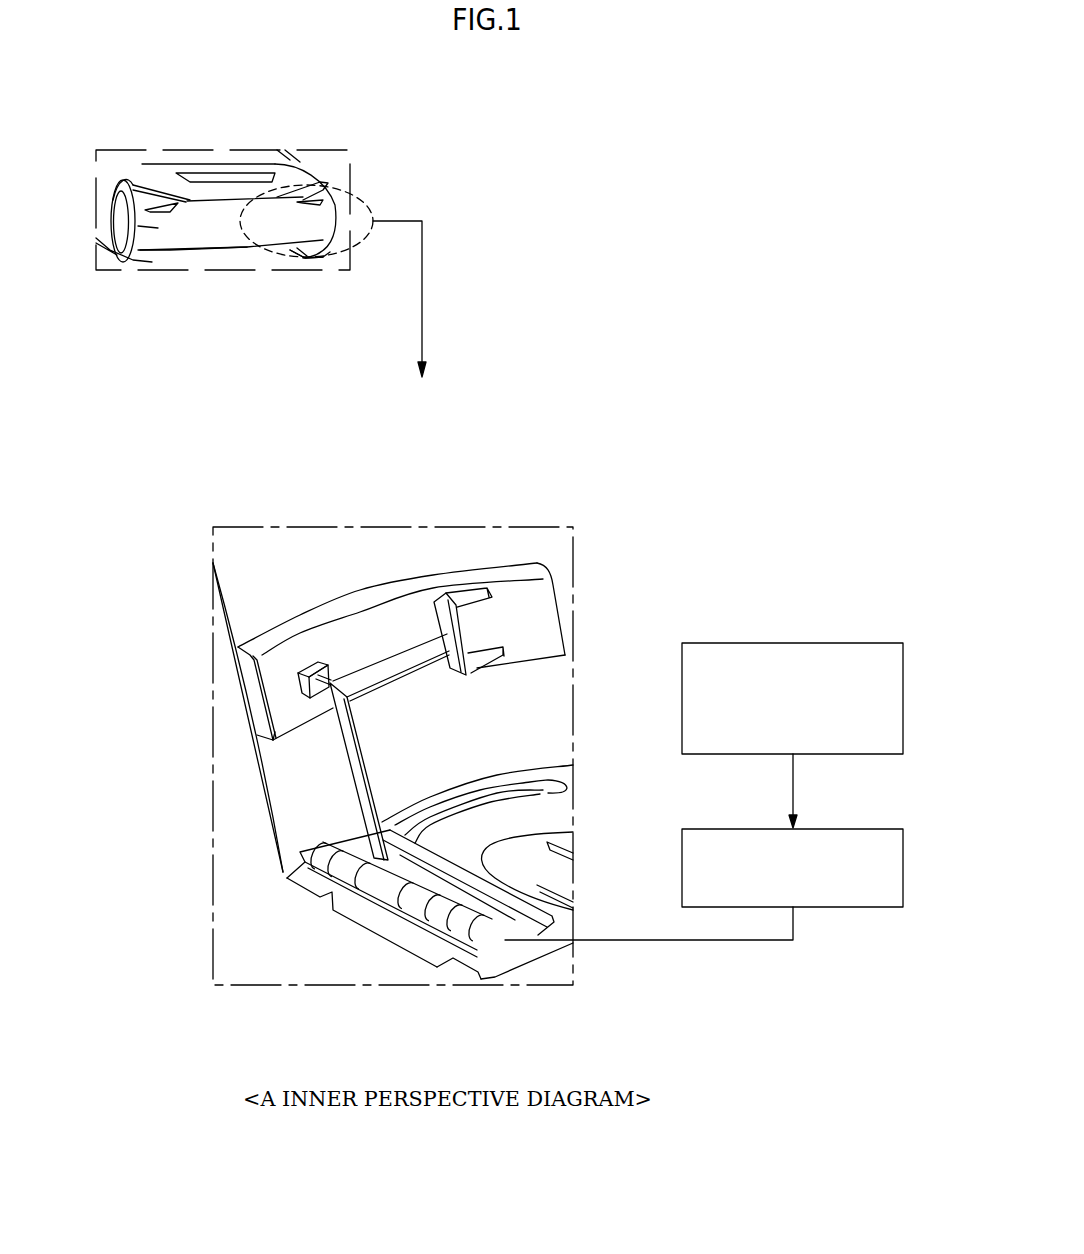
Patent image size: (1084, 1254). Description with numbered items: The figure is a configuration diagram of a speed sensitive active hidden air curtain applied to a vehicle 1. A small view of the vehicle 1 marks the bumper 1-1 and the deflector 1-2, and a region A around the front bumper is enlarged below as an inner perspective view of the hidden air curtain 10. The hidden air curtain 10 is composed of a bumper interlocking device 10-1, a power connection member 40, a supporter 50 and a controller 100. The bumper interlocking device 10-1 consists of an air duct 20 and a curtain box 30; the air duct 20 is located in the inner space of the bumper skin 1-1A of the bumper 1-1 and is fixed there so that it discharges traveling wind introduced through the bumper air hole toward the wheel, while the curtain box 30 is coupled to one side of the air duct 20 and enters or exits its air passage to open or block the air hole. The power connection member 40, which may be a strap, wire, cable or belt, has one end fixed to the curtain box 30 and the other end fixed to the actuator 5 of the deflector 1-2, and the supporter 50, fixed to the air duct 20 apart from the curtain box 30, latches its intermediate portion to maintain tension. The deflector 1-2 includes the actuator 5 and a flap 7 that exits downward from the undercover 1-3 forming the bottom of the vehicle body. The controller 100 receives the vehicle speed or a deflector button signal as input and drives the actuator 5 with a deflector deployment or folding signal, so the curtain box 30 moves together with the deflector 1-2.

The vehicle 1 is at (135, 165).
The bumper 1-1 is at (157, 225).
The bumper skin 1-1A is at (240, 597).
The deflector 1-2 is at (274, 236).
The undercover 1-3 is at (545, 813).
The enlarged region A is at (367, 203).
The hidden air curtain 10 is at (333, 222).
The bumper interlocking device 10-1 is at (560, 425).
The air duct 20 is at (497, 573).
The curtain box 30 is at (462, 635).
The power connection member 40 is at (353, 778).
The supporter 50 is at (298, 673).
The actuator 5 is at (393, 887).
The flap 7 is at (387, 925).
The controller 100 is at (845, 907).